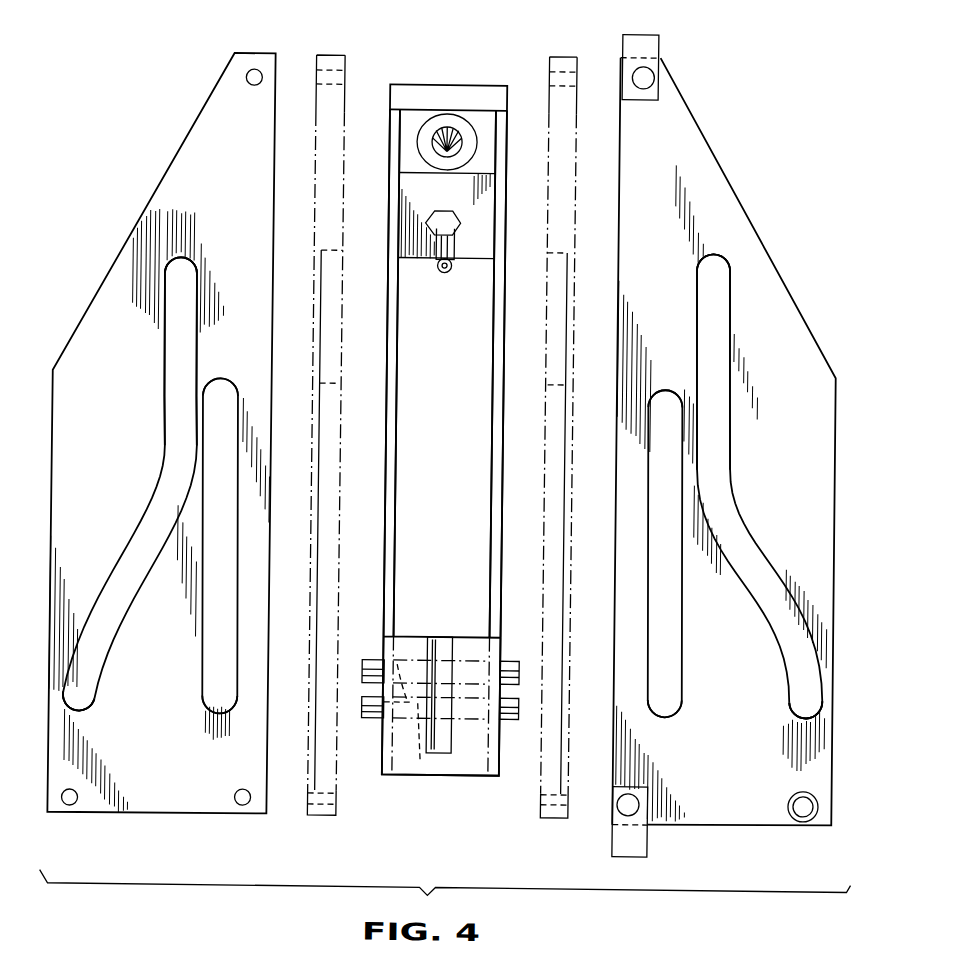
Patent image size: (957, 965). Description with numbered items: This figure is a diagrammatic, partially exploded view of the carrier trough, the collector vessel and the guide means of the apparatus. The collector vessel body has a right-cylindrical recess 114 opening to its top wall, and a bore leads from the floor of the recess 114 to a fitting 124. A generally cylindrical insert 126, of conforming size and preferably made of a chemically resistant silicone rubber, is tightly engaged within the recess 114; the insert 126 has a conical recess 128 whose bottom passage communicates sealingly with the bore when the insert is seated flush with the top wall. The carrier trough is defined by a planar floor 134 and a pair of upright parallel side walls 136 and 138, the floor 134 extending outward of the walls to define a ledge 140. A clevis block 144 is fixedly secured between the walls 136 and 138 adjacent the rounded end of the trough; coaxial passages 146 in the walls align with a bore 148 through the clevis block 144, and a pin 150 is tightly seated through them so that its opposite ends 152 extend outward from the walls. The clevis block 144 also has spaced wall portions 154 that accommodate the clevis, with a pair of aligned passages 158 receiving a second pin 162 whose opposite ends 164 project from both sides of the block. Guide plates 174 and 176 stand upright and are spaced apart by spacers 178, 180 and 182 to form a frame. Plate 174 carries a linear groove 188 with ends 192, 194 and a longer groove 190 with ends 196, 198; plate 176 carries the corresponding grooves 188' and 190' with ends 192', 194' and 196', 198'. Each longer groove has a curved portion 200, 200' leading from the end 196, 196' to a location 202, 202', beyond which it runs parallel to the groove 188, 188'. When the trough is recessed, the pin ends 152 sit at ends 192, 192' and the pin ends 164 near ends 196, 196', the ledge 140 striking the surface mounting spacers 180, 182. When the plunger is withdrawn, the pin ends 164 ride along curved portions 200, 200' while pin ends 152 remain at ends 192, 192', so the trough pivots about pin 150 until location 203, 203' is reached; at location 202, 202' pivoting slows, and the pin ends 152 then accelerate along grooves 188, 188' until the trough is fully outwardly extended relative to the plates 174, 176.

The recess 114 is at (417, 126).
The fitting 124 is at (442, 272).
The insert 126 is at (439, 118).
The conical recess 128 is at (455, 140).
The floor 134 is at (425, 331).
The side wall 136 is at (389, 346).
The side wall 138 is at (497, 353).
The ledge 140 is at (476, 98).
The clevis block 144 is at (457, 767).
The coaxial passages 146 is at (415, 718).
The bore 148 is at (473, 710).
The pin 150 is at (424, 760).
The pin ends 152 is at (366, 720).
The wall portions 154 is at (476, 647).
The aligned passages 158 is at (403, 662).
The pin 162 is at (471, 668).
The pin ends 164 is at (380, 666).
The guide plate 174 is at (175, 148).
The guide plate 176 is at (710, 144).
The spacer 178 is at (805, 810).
The spacer 180 is at (647, 45).
The spacer 182 is at (646, 840).
The groove 188 is at (194, 545).
The groove 190 is at (130, 484).
The groove end 192 is at (199, 723).
The groove end 194 is at (223, 373).
The groove end 196 is at (104, 708).
The groove end 198 is at (206, 269).
The curved portion 200 is at (131, 484).
The location 202 is at (140, 486).
The location 203 is at (115, 482).
The groove 188' is at (686, 554).
The groove 190' is at (760, 486).
The groove end 192' is at (683, 728).
The groove end 194' is at (664, 376).
The groove end 196' is at (772, 712).
The groove end 198' is at (683, 271).
The curved portion 200' is at (760, 486).
The location 202' is at (754, 487).
The location 203' is at (776, 486).